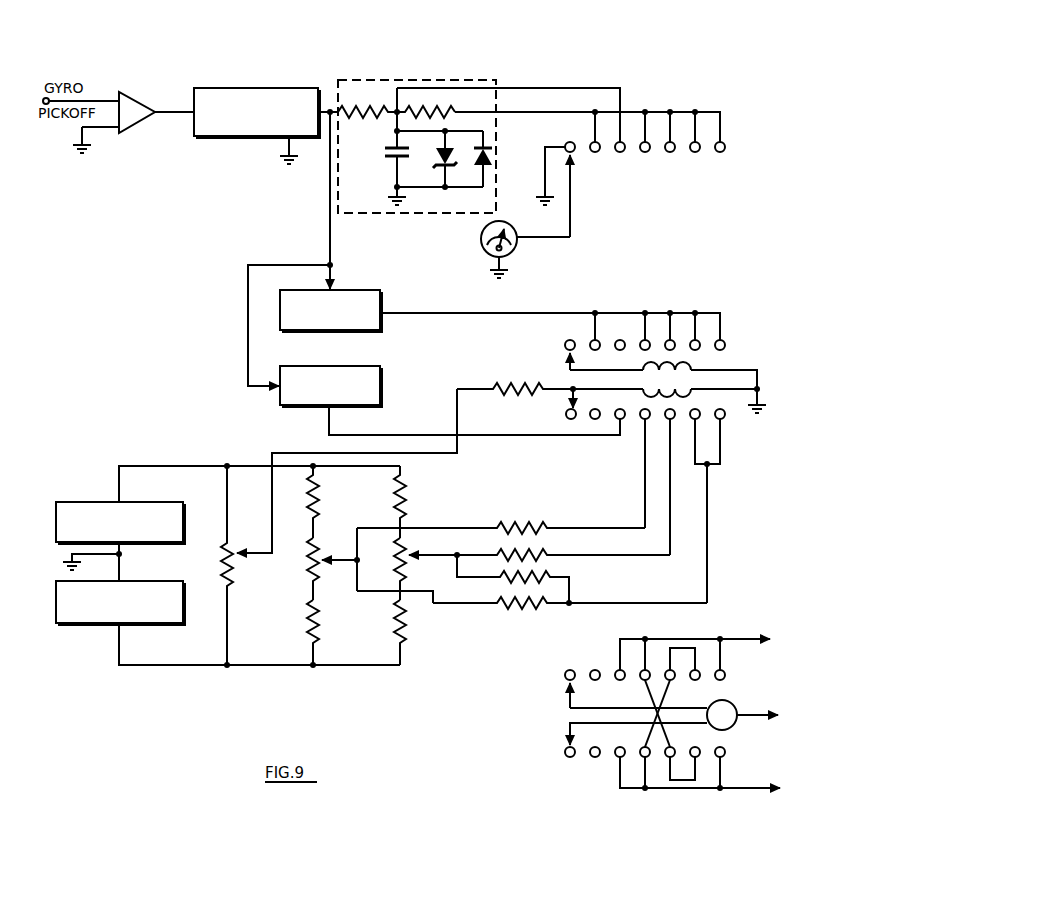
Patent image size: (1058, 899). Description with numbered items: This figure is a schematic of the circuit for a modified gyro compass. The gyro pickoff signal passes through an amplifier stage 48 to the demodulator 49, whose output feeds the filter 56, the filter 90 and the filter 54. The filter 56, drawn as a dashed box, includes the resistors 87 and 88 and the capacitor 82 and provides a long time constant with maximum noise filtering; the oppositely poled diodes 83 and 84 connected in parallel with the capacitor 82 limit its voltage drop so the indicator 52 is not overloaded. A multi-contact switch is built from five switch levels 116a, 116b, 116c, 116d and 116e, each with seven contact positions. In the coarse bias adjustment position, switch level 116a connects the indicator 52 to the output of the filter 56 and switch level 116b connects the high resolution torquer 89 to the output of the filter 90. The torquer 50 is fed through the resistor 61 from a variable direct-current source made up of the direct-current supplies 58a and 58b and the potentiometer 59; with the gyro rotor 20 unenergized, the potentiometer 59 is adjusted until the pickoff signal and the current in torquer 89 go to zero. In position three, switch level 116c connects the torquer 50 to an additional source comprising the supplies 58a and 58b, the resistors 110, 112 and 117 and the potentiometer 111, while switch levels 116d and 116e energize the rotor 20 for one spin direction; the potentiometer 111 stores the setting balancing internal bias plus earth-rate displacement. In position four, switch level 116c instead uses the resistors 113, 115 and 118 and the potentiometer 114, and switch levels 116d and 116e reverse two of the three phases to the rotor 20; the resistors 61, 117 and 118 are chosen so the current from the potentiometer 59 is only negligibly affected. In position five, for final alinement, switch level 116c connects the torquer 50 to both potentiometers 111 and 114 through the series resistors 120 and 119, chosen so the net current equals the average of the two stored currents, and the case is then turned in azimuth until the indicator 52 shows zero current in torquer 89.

The amplifier 48 is at (140, 107).
The demodulator 49 is at (290, 92).
The filter 56 is at (386, 80).
The resistor 87 is at (363, 106).
The resistor 88 is at (436, 107).
The capacitor 82 is at (392, 160).
The diode 83 is at (440, 156).
The diode 84 is at (479, 160).
The switch level 116a is at (682, 110).
The indicator 52 is at (516, 243).
The filter 90 is at (361, 292).
The filter 54 is at (375, 382).
The switch level 116b is at (677, 311).
The high resolution torquer 89 is at (699, 371).
The resistor 61 is at (512, 385).
The torquer 50 is at (676, 392).
The switch level 116c is at (618, 428).
The direct-current supply 58a is at (183, 524).
The direct-current supply 58b is at (183, 600).
The potentiometer 59 is at (236, 563).
The resistor 110 is at (323, 498).
The potentiometer 111 is at (319, 557).
The resistor 112 is at (320, 625).
The resistor 113 is at (405, 484).
The potentiometer 114 is at (409, 552).
The resistor 115 is at (407, 622).
The resistor 117 is at (497, 533).
The resistor 118 is at (497, 560).
The resistor 119 is at (500, 581).
The resistor 120 is at (505, 607).
The switch level 116d is at (663, 638).
The gyro rotor 20 is at (733, 722).
The switch level 116e is at (671, 791).